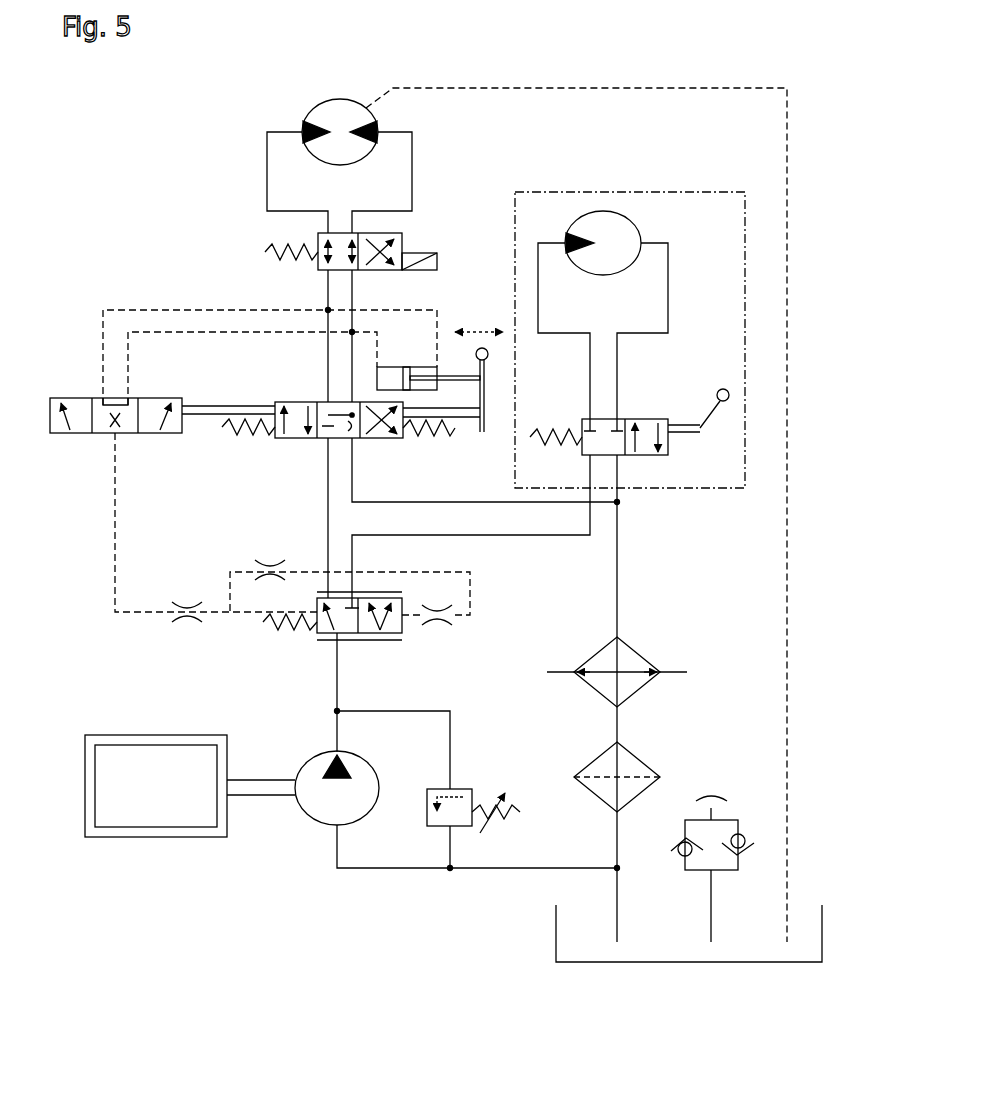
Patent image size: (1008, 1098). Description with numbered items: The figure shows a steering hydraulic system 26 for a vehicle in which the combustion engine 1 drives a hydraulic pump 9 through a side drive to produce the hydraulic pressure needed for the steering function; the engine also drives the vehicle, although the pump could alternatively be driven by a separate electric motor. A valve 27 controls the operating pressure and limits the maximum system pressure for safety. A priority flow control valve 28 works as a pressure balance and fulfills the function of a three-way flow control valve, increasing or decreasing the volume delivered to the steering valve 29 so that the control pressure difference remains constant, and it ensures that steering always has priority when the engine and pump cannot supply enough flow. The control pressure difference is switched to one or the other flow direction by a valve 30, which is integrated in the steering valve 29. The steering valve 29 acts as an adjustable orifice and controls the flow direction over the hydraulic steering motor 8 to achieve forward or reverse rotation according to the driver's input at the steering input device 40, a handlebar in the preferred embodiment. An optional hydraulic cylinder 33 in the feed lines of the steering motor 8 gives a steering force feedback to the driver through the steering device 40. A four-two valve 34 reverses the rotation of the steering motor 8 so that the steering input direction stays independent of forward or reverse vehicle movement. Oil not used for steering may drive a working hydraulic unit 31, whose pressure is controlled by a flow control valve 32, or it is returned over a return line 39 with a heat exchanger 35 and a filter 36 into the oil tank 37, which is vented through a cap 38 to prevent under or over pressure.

The combustion engine 1 is at (130, 840).
The hydraulic steering motor 8 is at (307, 113).
The hydraulic pump 9 is at (308, 823).
The hydraulic circuit 26 is at (200, 182).
The valve 27 is at (472, 789).
The priority flow control valve 28 is at (325, 620).
The steering valve 29 is at (292, 423).
The valve 30 is at (65, 437).
The working hydraulic unit 31 is at (623, 222).
The flow control valve 32 is at (660, 450).
The hydraulic cylinder 33 is at (388, 378).
The 4-2 valve 34 is at (396, 243).
The heat exchanger 35 is at (645, 648).
The filter 36 is at (640, 757).
The oil tank 37 is at (568, 932).
The cap 38 is at (735, 812).
The return line 39 is at (635, 563).
The steering input device 40 is at (475, 438).